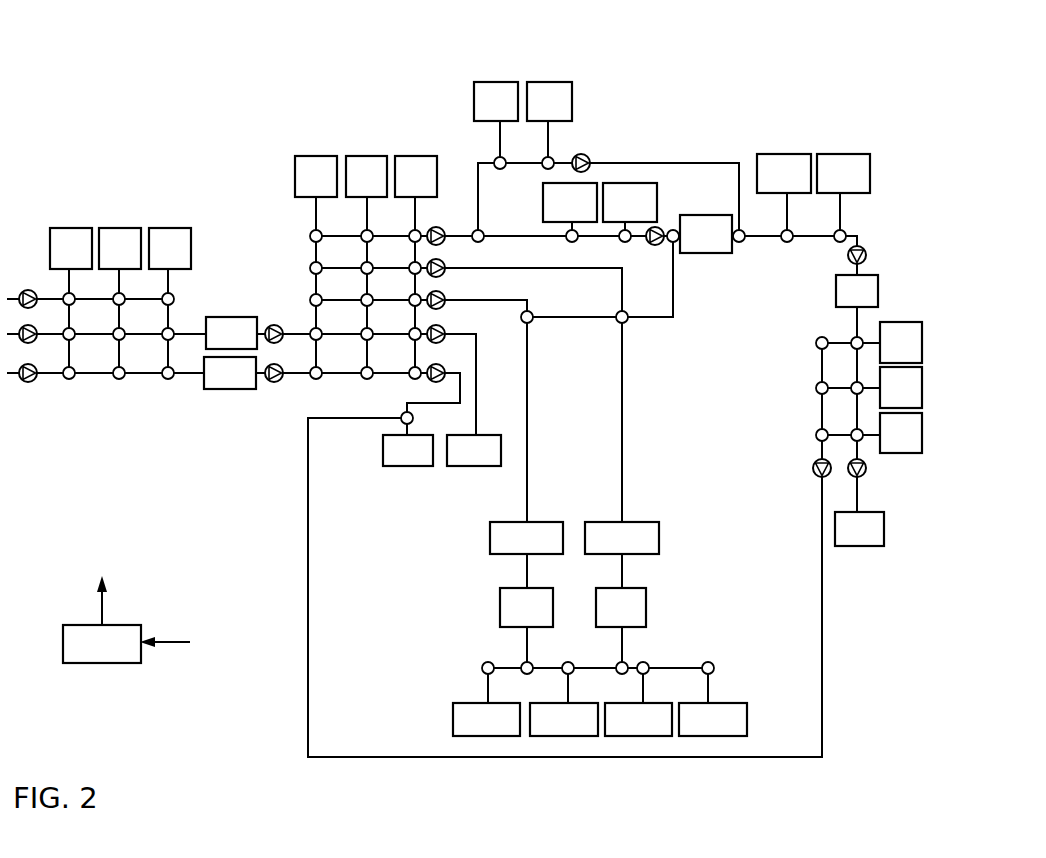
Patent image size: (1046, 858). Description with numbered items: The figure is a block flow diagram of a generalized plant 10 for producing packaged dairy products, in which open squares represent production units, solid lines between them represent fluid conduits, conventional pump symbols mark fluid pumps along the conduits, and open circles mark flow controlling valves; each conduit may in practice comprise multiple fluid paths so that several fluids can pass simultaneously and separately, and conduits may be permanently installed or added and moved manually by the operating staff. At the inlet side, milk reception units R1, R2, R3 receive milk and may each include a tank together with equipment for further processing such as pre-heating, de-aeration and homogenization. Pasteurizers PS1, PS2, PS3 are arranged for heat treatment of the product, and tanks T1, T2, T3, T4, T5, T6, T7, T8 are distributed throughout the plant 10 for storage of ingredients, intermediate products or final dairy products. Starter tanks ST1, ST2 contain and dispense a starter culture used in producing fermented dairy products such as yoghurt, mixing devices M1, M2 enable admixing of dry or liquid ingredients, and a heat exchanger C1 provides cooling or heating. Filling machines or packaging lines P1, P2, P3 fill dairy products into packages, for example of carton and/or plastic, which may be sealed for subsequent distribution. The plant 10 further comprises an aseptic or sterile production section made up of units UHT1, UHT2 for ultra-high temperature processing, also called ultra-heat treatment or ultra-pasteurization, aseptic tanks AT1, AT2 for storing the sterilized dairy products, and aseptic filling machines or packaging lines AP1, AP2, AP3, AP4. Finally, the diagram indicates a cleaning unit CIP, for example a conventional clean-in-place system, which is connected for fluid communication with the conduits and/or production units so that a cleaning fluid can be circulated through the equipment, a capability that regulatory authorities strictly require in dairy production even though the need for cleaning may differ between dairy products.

The plant 10 is at (707, 77).
The milk reception unit R1 is at (71, 248).
The milk reception unit R2 is at (120, 248).
The milk reception unit R3 is at (170, 248).
The pasteurizer PS1 is at (231, 333).
The pasteurizer PS2 is at (230, 373).
The pasteurizer PS3 is at (706, 234).
The tank T1 is at (316, 176).
The tank T2 is at (366, 176).
The tank T3 is at (416, 176).
The tank T4 is at (784, 173).
The tank T5 is at (843, 173).
The tank T6 is at (901, 342).
The tank T7 is at (901, 387).
The tank T8 is at (901, 433).
The starter tank ST1 is at (496, 101).
The starter tank ST2 is at (549, 101).
The mixing device M1 is at (570, 202).
The mixing device M2 is at (630, 202).
The heat exchanger C1 is at (857, 291).
The filling machine P1 is at (408, 450).
The filling machine P2 is at (474, 450).
The filling machine P3 is at (859, 529).
The ultra-high temperature processing unit UHT1 is at (526, 538).
The ultra-high temperature processing unit UHT2 is at (622, 538).
The aseptic tank AT1 is at (526, 607).
The aseptic tank AT2 is at (621, 607).
The aseptic filling machine AP1 is at (486, 719).
The aseptic filling machine AP2 is at (564, 719).
The aseptic filling machine AP3 is at (638, 719).
The aseptic filling machine AP4 is at (713, 719).
The cleaning unit CIP is at (102, 644).